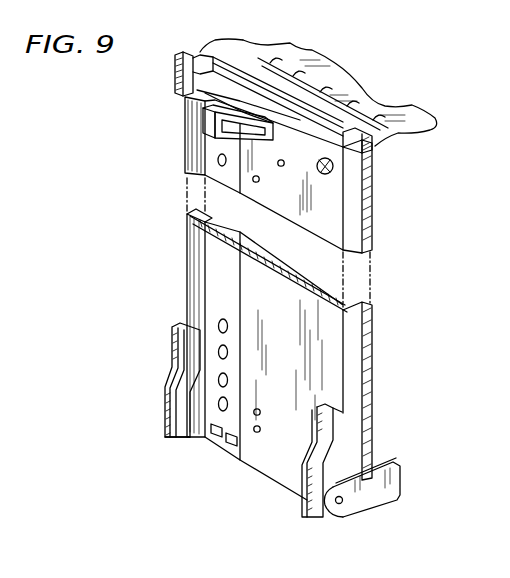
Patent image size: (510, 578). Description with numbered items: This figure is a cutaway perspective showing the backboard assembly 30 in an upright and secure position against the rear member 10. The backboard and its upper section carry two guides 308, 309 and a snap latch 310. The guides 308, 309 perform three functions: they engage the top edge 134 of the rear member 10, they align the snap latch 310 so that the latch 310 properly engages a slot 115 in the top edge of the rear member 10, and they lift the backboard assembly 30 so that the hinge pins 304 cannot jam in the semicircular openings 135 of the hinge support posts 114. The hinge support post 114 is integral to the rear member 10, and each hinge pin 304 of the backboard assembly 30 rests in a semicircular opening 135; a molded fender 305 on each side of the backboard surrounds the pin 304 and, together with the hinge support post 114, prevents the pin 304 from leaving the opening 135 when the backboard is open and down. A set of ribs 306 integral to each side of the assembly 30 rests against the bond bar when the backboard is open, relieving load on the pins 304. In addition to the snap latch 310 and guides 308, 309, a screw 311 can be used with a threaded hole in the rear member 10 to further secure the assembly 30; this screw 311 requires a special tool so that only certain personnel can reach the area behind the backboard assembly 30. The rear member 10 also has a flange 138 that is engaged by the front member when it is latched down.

The rear member 10 is at (372, 104).
The backboard assembly 30 is at (318, 343).
The hinge support post 114 is at (390, 480).
The slot 115 is at (255, 127).
The top edge 134 is at (215, 88).
The semicircular opening 135 is at (344, 502).
The flange 138 is at (305, 100).
The hinge pin 304 is at (333, 512).
The molded fender 305 is at (186, 434).
The ribs 306 is at (192, 345).
The guide 308 is at (195, 63).
The guide 309 is at (376, 145).
The snap latch 310 is at (203, 125).
The screw 311 is at (322, 176).